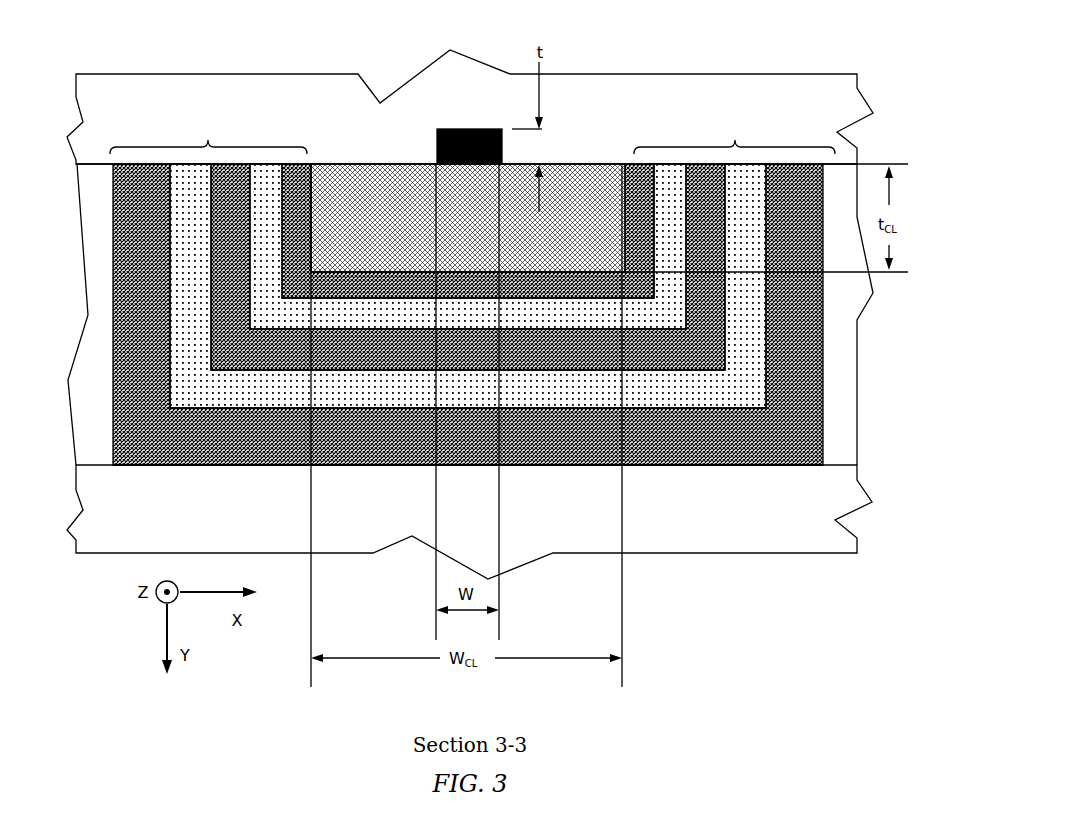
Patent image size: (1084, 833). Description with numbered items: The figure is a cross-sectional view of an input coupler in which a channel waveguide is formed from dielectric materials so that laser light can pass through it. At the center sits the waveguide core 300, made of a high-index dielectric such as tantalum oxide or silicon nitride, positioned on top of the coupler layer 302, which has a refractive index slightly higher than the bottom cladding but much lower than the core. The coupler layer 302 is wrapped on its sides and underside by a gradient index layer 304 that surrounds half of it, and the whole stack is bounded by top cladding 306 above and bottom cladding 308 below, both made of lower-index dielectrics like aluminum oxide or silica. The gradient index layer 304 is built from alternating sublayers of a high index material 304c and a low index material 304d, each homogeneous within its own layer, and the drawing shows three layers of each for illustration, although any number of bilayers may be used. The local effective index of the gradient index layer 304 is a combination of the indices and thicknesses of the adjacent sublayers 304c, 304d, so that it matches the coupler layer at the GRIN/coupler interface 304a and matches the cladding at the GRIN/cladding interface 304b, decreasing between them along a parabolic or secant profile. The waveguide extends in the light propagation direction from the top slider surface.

The waveguide core 300 is at (472, 129).
The coupler layer 302 is at (562, 190).
The gradient index (GRIN) layer 304 is at (472, 132).
The GRIN/coupler interface 304a is at (311, 164).
The GRIN/cladding interface 304b is at (707, 466).
The high index material 304c is at (468, 314).
The low index material 304d is at (468, 286).
The top cladding 306 is at (257, 90).
The bottom cladding 308 is at (767, 537).